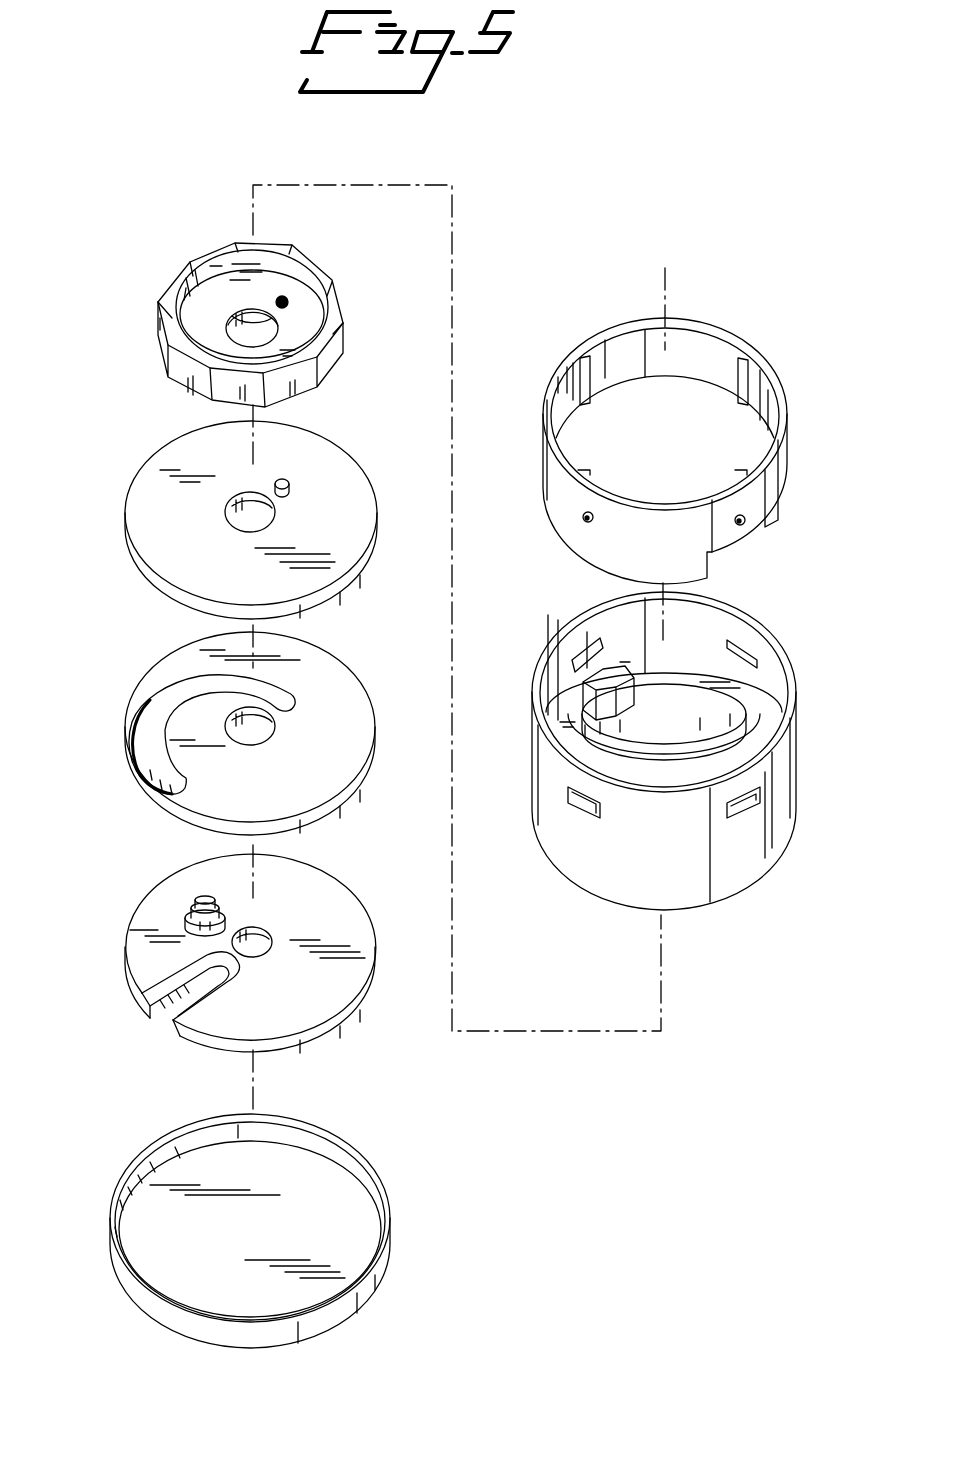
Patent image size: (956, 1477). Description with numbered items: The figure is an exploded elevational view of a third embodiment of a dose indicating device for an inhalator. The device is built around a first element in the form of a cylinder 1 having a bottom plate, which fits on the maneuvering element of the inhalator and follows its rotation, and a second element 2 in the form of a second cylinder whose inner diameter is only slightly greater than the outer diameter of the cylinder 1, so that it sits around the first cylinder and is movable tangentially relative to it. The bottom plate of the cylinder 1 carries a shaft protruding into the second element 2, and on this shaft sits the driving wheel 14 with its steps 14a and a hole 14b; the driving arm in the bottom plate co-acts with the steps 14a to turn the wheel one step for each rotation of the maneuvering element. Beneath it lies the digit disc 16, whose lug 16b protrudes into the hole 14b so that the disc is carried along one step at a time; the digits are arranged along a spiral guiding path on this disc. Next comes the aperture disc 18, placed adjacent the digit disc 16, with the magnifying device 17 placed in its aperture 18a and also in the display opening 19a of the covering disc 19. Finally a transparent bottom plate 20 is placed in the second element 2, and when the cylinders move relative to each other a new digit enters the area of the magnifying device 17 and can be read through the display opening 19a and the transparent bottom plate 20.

The cylinder 1 is at (745, 340).
The second element 2 is at (765, 620).
The driving wheel 14 is at (170, 262).
The steps 14a is at (333, 280).
The hole 14b is at (288, 304).
The digit disc 16 is at (148, 455).
The lug 16b is at (290, 485).
The magnifying device 17 is at (185, 910).
The aperture disc 18 is at (145, 663).
The aperture 18a is at (165, 785).
The covering disc 19 is at (335, 860).
The display opening 19a is at (175, 1005).
The transparent bottom plate 20 is at (345, 1133).